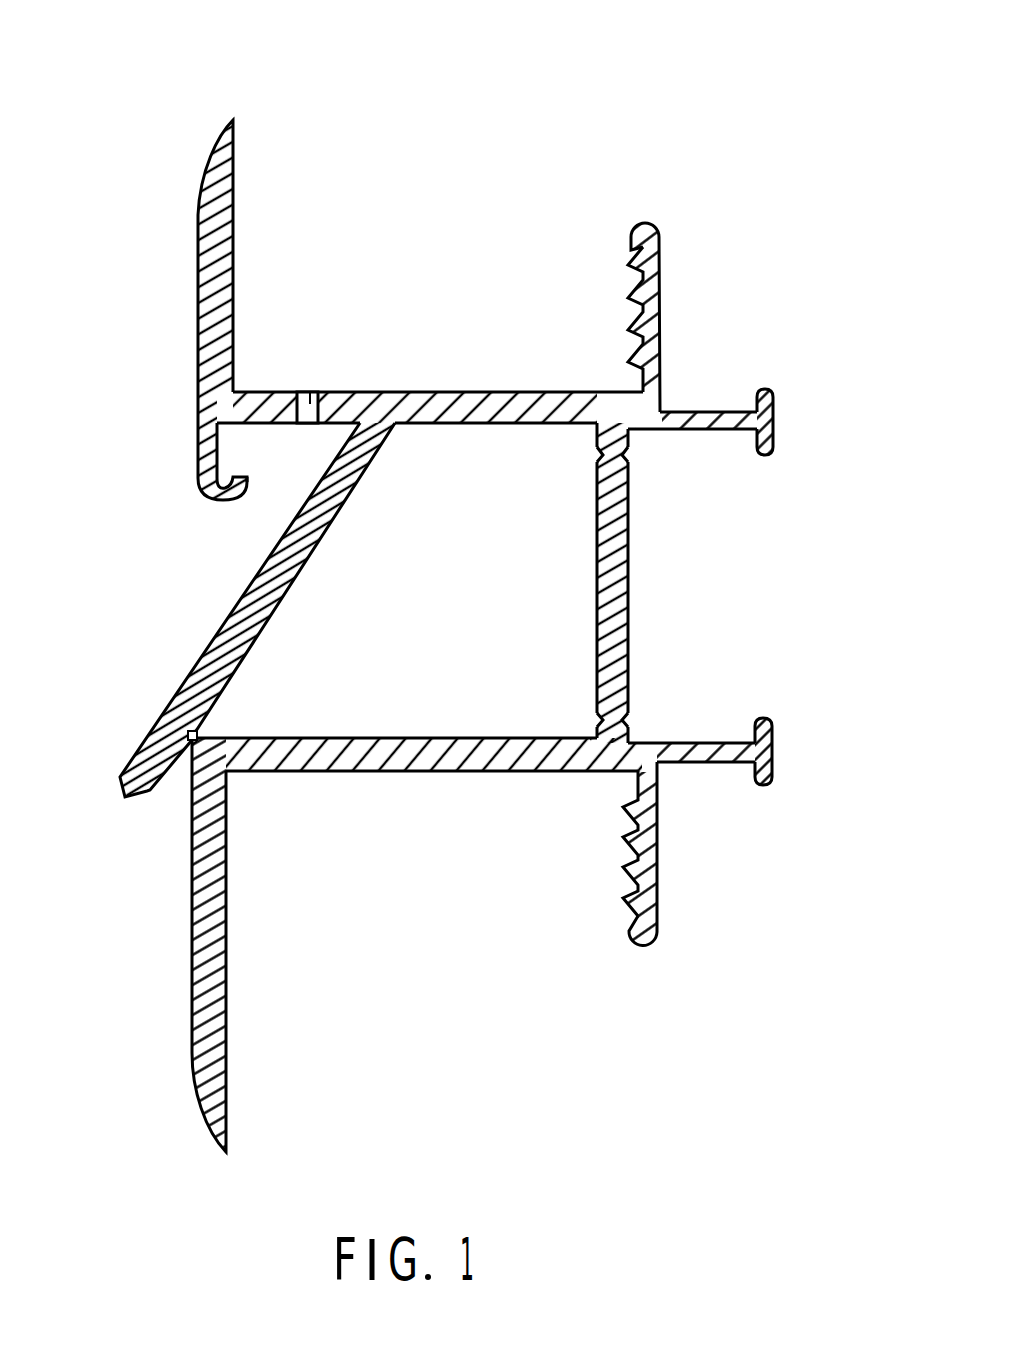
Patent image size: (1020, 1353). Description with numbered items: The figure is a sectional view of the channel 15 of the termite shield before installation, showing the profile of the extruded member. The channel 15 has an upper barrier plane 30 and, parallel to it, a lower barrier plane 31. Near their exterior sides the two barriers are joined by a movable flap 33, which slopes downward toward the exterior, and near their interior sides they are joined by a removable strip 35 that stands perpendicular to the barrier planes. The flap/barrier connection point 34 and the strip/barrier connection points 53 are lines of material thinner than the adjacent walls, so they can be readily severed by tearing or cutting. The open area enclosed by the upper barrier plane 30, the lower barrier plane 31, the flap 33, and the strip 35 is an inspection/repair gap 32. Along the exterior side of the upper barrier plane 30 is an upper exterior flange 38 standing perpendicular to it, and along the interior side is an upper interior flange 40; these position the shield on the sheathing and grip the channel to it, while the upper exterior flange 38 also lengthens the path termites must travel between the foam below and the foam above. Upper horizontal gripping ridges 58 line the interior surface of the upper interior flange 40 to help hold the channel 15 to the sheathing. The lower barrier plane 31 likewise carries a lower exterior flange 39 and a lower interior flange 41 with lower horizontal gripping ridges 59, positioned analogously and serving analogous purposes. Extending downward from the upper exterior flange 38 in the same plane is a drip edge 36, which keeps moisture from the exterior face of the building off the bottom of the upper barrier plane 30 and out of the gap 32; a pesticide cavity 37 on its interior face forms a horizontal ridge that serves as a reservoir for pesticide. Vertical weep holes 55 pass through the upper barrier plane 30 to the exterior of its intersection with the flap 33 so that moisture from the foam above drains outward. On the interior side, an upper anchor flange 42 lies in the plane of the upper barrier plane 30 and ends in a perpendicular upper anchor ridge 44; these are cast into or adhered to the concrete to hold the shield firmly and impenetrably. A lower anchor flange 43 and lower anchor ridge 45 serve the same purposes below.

The channel 15 is at (622, 118).
The upper barrier plane 30 is at (490, 392).
The lower barrier plane 31 is at (438, 775).
The inspection/repair gap 32 is at (382, 655).
The movable flap 33 is at (168, 705).
The flap/barrier connection point 34 is at (187, 742).
The removable strip 35 is at (630, 585).
The drip edge 36 is at (197, 482).
The pesticide cavity 37 is at (226, 478).
The upper exterior flange 38 is at (200, 212).
The lower exterior flange 39 is at (192, 982).
The upper interior flange 40 is at (664, 238).
The lower interior flange 41 is at (658, 906).
The upper anchor flange 42 is at (708, 412).
The lower anchor flange 43 is at (692, 762).
The upper anchor ridge 44 is at (777, 438).
The lower anchor ridge 45 is at (775, 782).
The strip/barrier connection points 53 is at (628, 452).
The vertical weep holes 55 is at (310, 393).
The upper horizontal gripping ridges 58 is at (630, 262).
The lower horizontal gripping ridges 59 is at (630, 888).